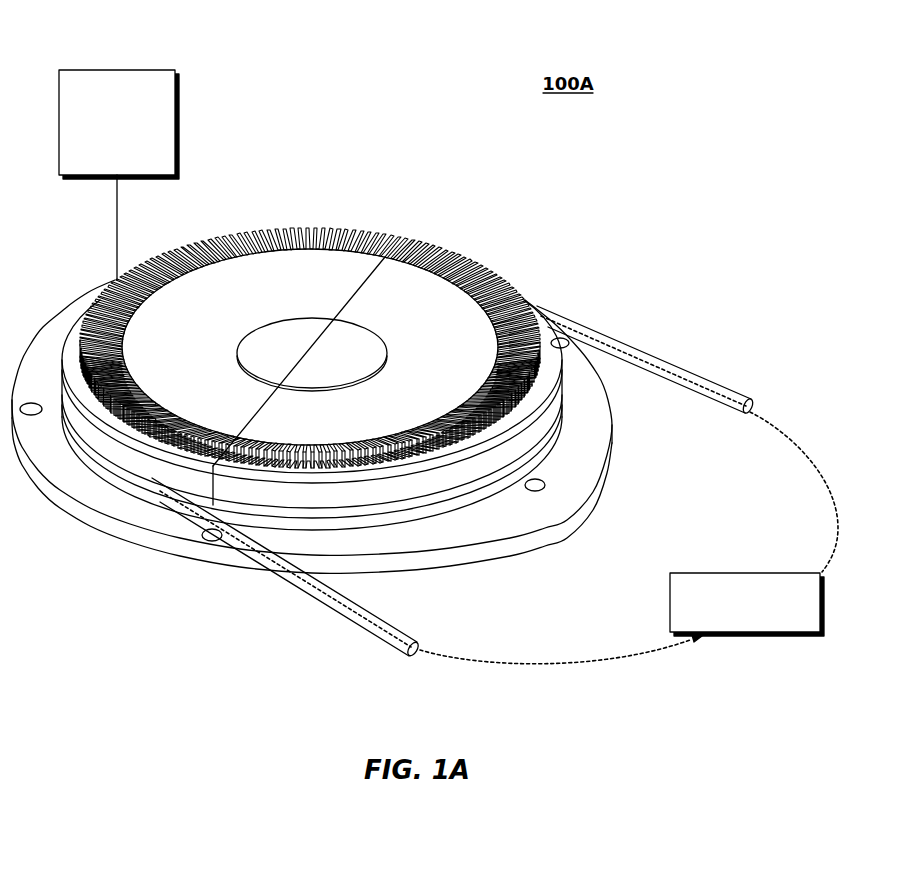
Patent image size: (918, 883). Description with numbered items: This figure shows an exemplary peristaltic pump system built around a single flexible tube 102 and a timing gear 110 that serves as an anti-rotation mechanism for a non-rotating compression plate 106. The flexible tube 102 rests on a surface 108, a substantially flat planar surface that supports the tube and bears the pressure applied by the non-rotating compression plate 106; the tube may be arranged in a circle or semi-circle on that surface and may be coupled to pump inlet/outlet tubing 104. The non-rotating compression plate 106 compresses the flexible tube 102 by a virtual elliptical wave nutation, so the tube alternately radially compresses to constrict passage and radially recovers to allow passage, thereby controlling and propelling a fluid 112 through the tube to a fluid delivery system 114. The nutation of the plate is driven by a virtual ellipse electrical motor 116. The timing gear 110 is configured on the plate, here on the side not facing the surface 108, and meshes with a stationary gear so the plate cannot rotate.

The flexible tube 102 is at (618, 341).
The pump inlet/outlet tubing 104 is at (756, 404).
The non-rotating compression plate 106 is at (97, 293).
The surface 108 is at (100, 540).
The timing gear 110 is at (428, 255).
The fluid 112 is at (705, 388).
The fluid delivery system 114 is at (697, 572).
The virtual ellipse electrical motor 116 is at (83, 68).